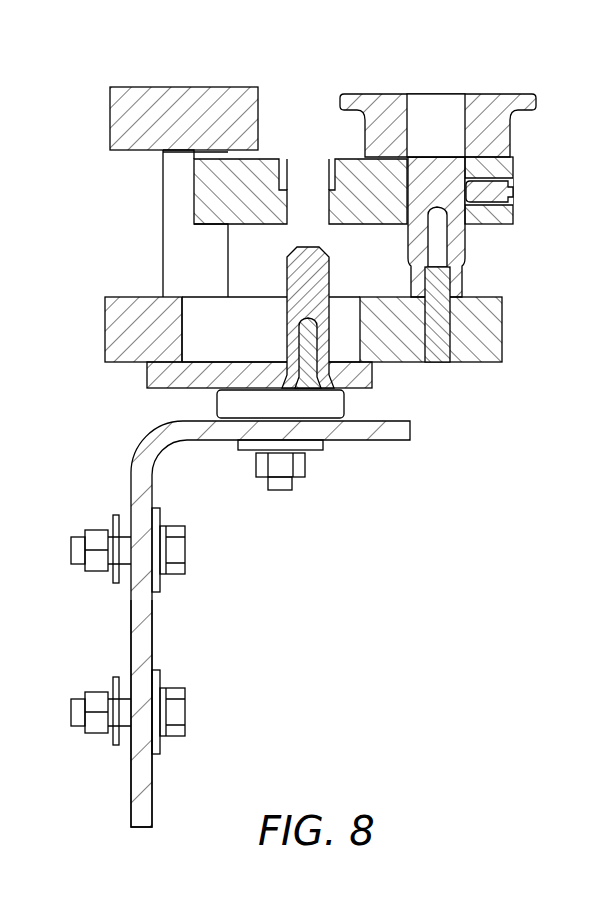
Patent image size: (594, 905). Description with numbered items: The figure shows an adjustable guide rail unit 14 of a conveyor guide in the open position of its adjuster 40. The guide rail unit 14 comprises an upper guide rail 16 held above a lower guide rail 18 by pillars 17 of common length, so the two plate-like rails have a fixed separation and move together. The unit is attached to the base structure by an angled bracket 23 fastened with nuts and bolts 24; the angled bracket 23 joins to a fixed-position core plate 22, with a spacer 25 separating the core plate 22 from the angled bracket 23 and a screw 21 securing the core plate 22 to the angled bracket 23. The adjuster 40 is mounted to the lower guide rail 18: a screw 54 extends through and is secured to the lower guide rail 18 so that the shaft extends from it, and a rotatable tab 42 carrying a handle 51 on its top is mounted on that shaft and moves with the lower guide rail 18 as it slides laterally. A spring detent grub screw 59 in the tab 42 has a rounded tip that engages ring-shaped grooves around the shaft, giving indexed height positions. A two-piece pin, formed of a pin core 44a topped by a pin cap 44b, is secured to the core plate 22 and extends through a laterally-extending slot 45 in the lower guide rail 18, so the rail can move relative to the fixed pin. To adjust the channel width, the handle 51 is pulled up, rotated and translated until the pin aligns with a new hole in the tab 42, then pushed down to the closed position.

The guide rail unit 14 is at (102, 262).
The upper guide rail 16 is at (188, 87).
The pillar 17 is at (163, 222).
The lower guide rail 18 is at (105, 326).
The screw 21 is at (280, 490).
The core plate 22 is at (147, 375).
The angled bracket 23 is at (131, 812).
The nuts and bolts 24 is at (187, 548).
The spacer 25 is at (217, 404).
The adjuster 40 is at (520, 245).
The tab 42 is at (291, 160).
The pin core 44a is at (299, 350).
The pin cap 44b is at (330, 258).
The slot 45 is at (222, 332).
The handle 51 is at (536, 100).
The screw 54 is at (437, 364).
The spring detent grub screw 59 is at (515, 190).